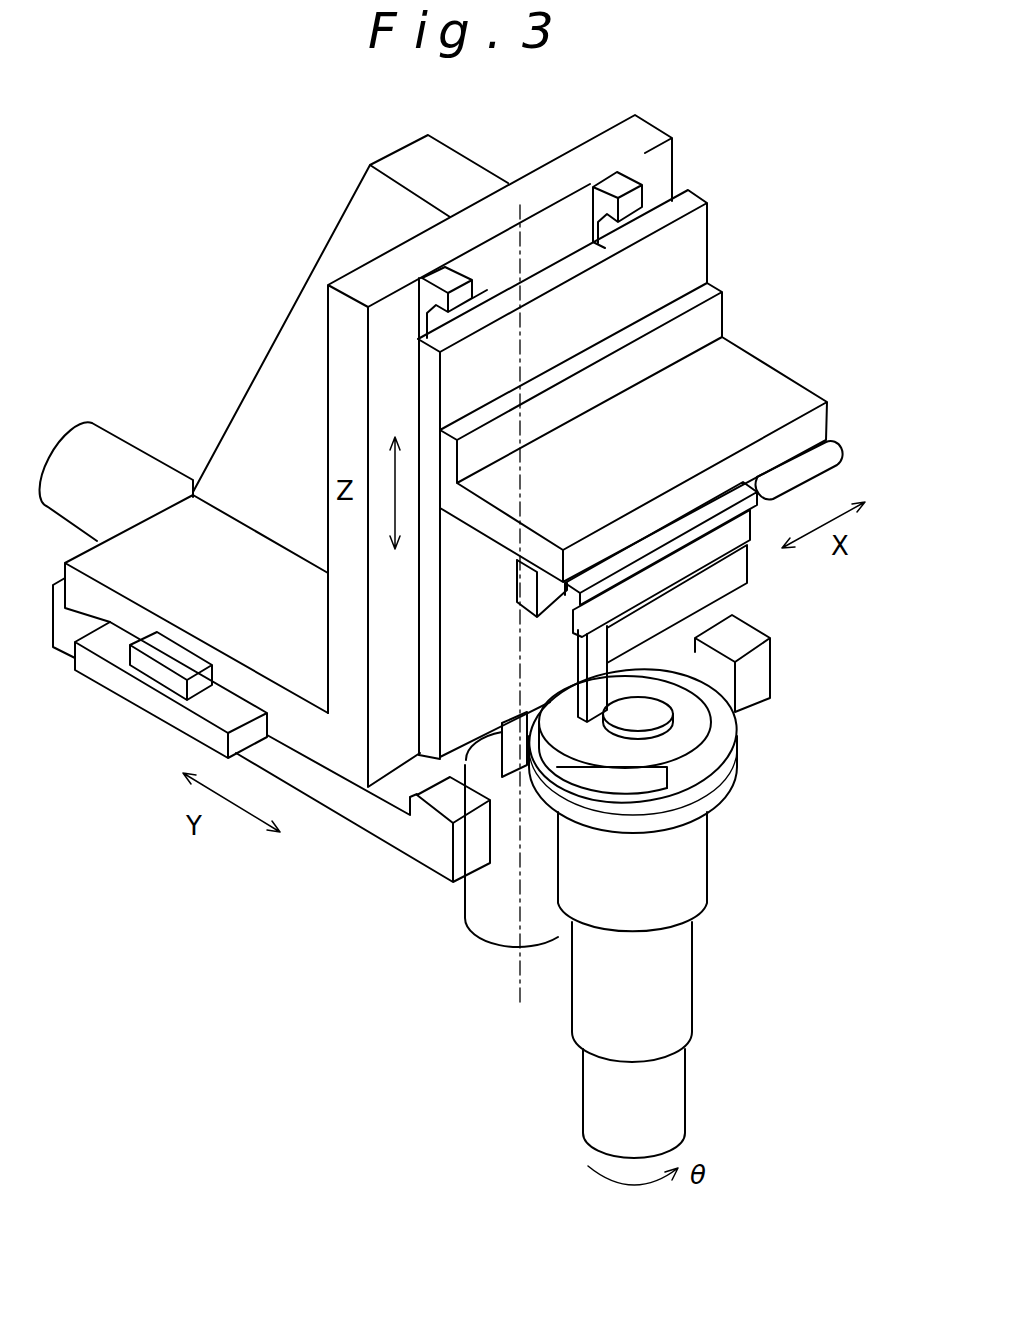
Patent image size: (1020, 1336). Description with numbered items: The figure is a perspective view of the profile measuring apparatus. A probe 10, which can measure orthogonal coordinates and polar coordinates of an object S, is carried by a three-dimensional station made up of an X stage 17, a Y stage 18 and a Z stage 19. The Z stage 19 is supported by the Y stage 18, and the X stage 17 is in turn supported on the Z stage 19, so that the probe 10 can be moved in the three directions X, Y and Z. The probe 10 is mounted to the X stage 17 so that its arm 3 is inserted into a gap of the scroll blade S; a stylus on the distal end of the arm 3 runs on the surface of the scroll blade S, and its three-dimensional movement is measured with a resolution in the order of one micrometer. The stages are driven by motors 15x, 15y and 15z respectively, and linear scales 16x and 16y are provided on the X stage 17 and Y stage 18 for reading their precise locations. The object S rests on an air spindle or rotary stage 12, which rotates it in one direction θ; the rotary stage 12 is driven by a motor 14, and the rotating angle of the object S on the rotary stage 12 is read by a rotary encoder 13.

The arm 3 is at (575, 727).
The probe 10 is at (577, 652).
The rotary stage 12 is at (682, 842).
The rotary encoder 13 is at (675, 987).
The motor 14 is at (670, 1068).
The motor 15x is at (813, 463).
The motor 15y is at (92, 450).
The motor 15z is at (503, 920).
The linear scale 16x is at (750, 540).
The linear scale 16y is at (165, 710).
The X stage 17 is at (722, 495).
The Y stage 18 is at (100, 560).
The Z stage 19 is at (683, 235).
The object S is at (695, 745).